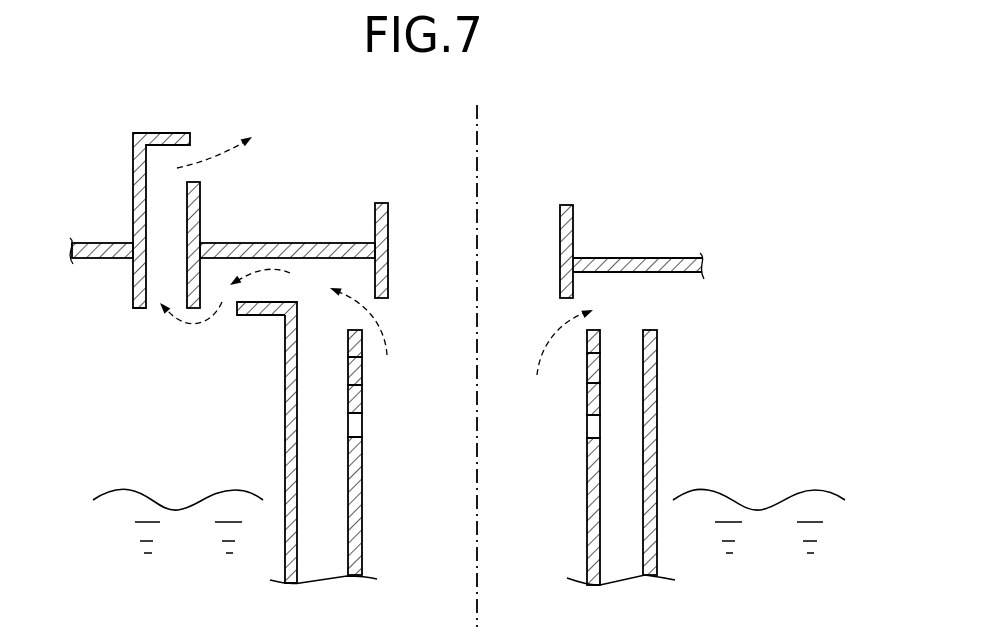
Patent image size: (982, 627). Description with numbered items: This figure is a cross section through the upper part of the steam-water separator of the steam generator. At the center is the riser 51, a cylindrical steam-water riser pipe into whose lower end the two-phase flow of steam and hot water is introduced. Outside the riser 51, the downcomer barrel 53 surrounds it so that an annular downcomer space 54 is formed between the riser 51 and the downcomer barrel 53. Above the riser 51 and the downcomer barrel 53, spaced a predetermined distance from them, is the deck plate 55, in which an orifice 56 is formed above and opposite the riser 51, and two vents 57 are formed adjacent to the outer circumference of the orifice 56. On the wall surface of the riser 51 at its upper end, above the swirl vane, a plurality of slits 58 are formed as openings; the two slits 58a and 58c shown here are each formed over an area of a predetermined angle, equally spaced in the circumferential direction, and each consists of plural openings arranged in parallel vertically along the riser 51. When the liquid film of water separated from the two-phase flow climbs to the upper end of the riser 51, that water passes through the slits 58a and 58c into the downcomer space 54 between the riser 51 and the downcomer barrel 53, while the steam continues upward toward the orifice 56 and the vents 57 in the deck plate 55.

The riser 51 is at (600, 462).
The downcomer barrel 53 is at (657, 362).
The downcomer space 54 is at (325, 447).
The deck plate 55 is at (645, 258).
The orifice 56 is at (565, 205).
The vent 57 is at (133, 158).
The slits 58 is at (348, 360).
The slit 58a is at (362, 425).
The slit 58c is at (600, 387).